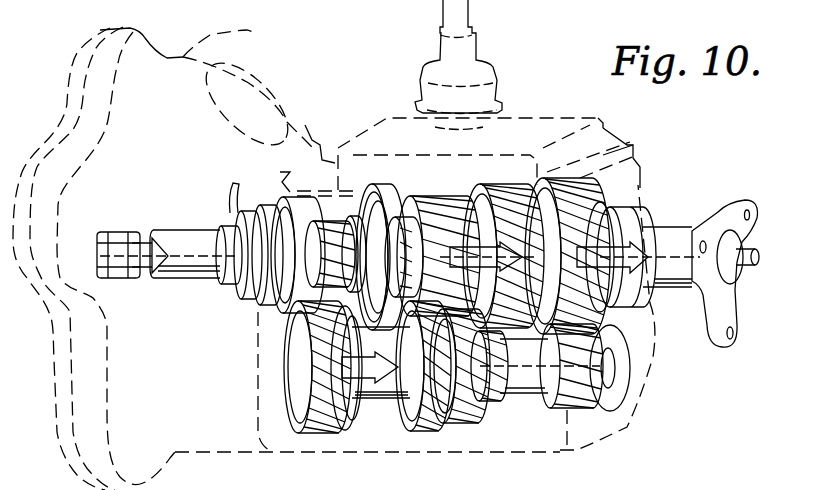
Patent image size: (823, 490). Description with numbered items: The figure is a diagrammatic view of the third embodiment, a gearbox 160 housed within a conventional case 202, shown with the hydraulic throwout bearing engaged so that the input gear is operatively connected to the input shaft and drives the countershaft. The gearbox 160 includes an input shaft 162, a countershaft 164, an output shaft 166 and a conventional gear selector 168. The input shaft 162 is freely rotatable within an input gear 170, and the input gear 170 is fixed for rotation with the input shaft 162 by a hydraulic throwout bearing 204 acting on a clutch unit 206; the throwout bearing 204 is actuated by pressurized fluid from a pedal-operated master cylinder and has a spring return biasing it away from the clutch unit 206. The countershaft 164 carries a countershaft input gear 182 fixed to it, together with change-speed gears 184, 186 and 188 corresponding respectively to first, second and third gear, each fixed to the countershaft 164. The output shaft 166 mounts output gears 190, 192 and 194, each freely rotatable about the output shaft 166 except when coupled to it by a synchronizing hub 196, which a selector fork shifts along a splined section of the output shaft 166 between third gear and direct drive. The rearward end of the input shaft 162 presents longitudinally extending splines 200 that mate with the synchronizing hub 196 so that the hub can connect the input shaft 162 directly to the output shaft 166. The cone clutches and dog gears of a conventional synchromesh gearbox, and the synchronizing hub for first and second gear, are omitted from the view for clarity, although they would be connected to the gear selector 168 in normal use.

The gearbox 160 is at (672, 164).
The input shaft 162 is at (181, 258).
The countershaft 164 is at (372, 390).
The output shaft 166 is at (664, 240).
The gear selector 168 is at (485, 60).
The input gear 170 is at (327, 213).
The countershaft input gear 182 is at (332, 425).
The change-speed gear 184 is at (556, 416).
The change-speed gear 186 is at (463, 412).
The change-speed gear 188 is at (420, 413).
The output gear 190 is at (572, 175).
The output gear 192 is at (470, 200).
The output gear 194 is at (430, 213).
The synchronizing hub 196 is at (395, 205).
The splines 200 is at (313, 213).
The case 202 is at (163, 255).
The hydraulic throwout bearing 204 is at (230, 232).
The clutch unit 206 is at (258, 206).